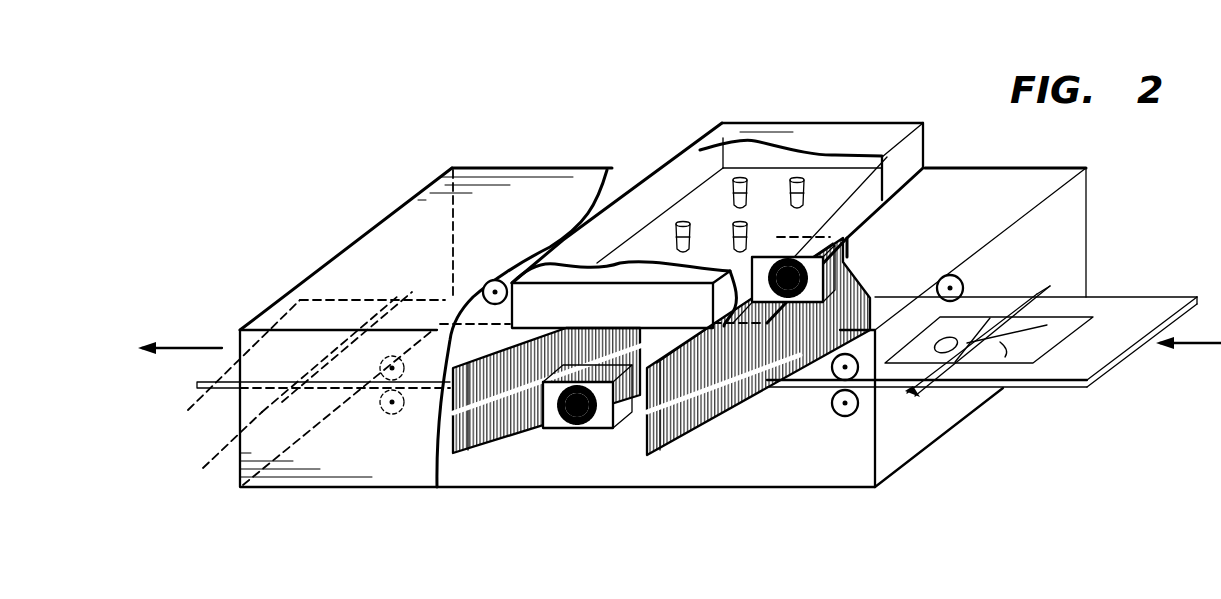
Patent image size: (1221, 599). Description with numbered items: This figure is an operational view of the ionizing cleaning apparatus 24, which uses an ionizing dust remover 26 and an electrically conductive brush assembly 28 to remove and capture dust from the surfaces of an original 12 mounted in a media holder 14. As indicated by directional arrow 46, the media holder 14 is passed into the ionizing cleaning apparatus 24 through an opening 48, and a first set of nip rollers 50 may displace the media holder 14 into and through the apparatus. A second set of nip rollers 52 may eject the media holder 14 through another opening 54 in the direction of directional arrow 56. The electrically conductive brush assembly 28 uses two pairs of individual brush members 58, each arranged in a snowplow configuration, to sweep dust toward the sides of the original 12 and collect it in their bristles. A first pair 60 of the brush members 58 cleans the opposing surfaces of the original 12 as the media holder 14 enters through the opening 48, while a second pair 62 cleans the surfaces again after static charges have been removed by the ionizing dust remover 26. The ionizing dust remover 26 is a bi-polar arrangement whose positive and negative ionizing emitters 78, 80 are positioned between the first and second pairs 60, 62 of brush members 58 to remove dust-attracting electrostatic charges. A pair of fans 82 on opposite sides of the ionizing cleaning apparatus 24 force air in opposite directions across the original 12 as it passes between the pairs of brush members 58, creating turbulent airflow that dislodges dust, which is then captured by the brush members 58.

The original 12 is at (1103, 317).
The media holder 14 is at (1181, 277).
The ionizing cleaning apparatus 24 is at (392, 154).
The ionizing dust remover 26 is at (860, 142).
The electrically conductive brush assembly 28 is at (650, 492).
The directional arrow 46 is at (1207, 345).
The opening 48 is at (917, 400).
The first set of nip rollers 50 is at (950, 275).
The second set of nip rollers 52 is at (493, 281).
The opening 54 is at (310, 388).
The directional arrow 56 is at (190, 348).
The brush members 58 is at (463, 447).
The first pair of brush members 60 is at (628, 449).
The second pair of brush members 62 is at (508, 460).
The positive ionizing emitters 78 is at (684, 222).
The negative ionizing emitters 80 is at (747, 233).
The fans 82 is at (848, 246).